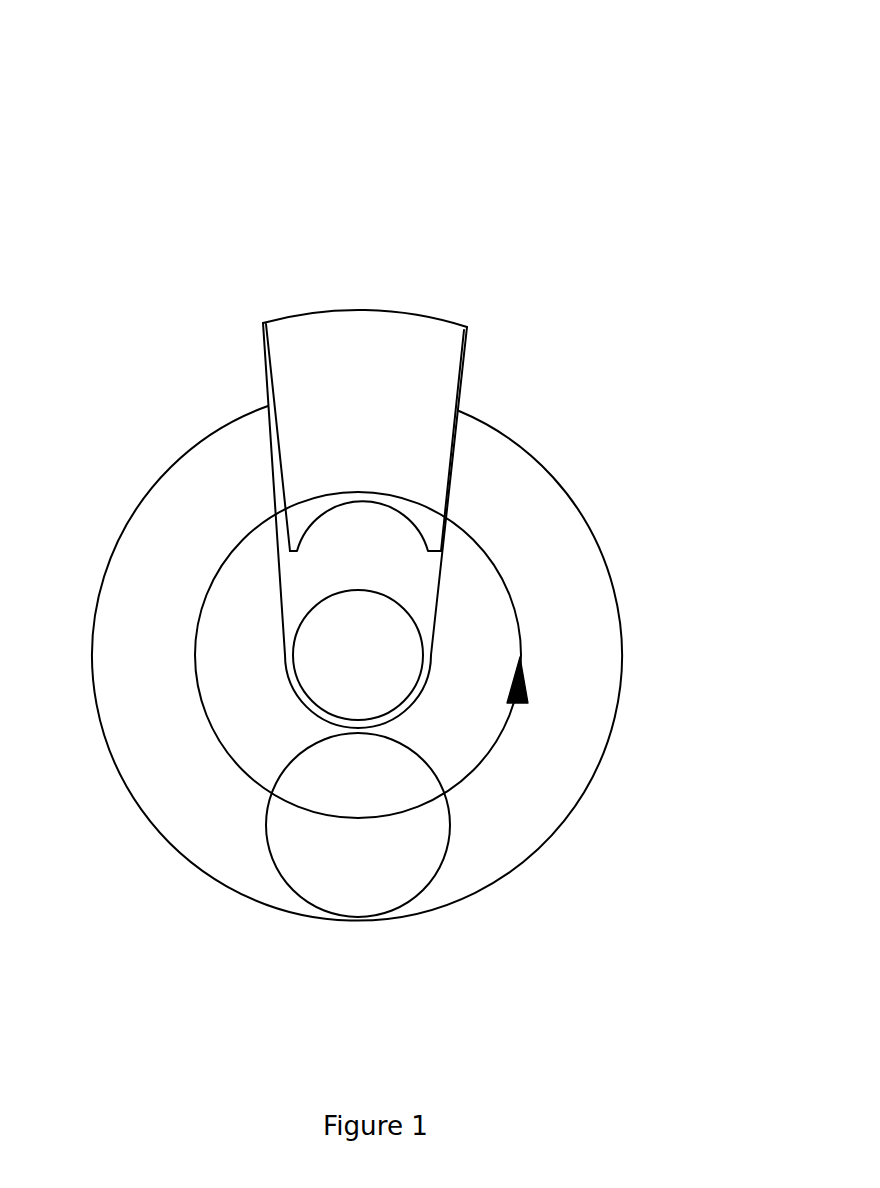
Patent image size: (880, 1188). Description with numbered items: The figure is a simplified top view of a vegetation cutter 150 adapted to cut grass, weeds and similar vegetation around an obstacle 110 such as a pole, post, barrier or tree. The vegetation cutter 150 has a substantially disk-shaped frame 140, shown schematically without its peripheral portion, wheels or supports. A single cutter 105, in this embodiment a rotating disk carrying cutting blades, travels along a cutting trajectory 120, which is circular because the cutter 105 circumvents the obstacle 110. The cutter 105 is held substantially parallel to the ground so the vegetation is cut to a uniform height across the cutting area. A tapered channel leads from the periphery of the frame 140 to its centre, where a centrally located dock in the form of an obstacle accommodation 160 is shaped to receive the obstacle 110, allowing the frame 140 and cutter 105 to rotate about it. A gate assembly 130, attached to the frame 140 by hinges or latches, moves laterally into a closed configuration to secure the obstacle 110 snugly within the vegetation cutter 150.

The cutter 105 is at (385, 866).
The obstacle 110 is at (327, 648).
The cutting trajectory 120 is at (505, 585).
The gate assembly 130 is at (428, 346).
The frame 140 is at (582, 505).
The vegetation cutter 150 is at (650, 100).
The obstacle accommodation 160 is at (353, 542).